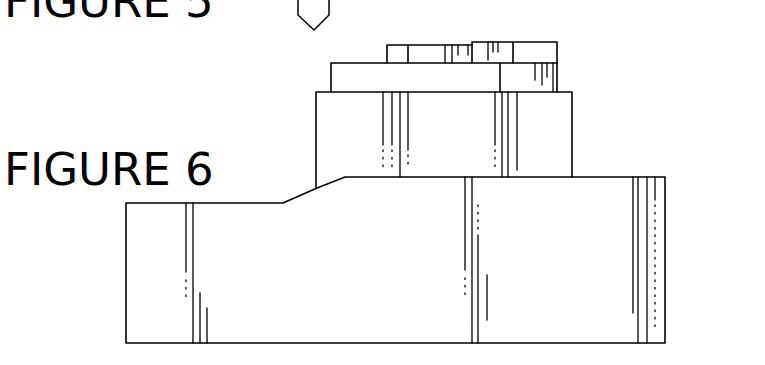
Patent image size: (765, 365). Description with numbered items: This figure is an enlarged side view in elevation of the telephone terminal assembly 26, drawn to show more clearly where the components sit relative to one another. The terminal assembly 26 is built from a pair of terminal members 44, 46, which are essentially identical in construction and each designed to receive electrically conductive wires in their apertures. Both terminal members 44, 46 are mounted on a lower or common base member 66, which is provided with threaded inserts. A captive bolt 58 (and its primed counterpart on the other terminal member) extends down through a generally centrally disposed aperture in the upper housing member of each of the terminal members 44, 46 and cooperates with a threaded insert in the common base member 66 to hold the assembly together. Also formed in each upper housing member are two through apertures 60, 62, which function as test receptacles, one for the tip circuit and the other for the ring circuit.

The terminal assembly 26 is at (421, 171).
The common base member 66 is at (627, 256).
The captive bolt 58 is at (431, 44).
The through aperture 60 is at (581, 31).
The through aperture 62 is at (539, 43).
The terminal member 46 is at (499, 72).
The terminal member 44 is at (543, 72).